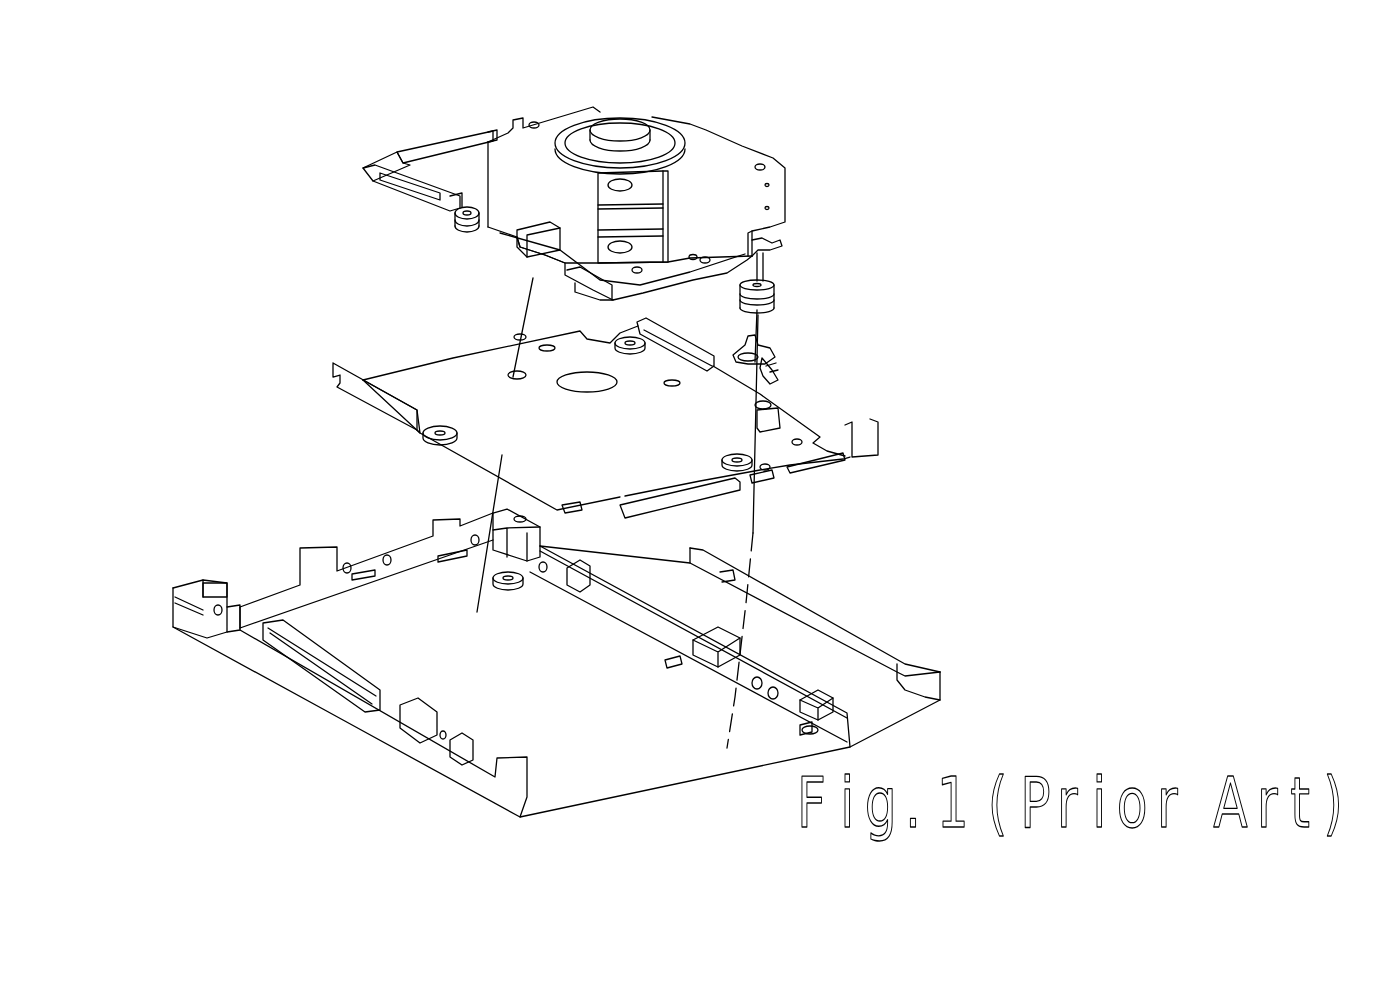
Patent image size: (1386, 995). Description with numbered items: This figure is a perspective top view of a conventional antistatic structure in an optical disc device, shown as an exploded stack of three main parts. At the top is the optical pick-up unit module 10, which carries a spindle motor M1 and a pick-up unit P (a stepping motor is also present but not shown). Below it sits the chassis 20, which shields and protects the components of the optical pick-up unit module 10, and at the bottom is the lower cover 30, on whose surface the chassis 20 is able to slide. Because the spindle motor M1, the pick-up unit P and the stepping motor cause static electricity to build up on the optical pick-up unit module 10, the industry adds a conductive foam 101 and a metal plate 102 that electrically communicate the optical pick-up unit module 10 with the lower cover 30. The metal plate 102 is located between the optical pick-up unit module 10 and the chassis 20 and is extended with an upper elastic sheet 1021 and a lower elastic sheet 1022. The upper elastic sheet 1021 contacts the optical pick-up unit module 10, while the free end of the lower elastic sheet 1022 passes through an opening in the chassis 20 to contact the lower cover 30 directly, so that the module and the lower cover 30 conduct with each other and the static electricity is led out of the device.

The optical pick-up unit module 10 is at (647, 212).
The spindle motor M1 is at (614, 128).
The pick-up unit P is at (643, 190).
The conductive foam 101 is at (514, 337).
The metal plate 102 is at (740, 357).
The upper elastic sheet 1021 is at (756, 345).
The lower elastic sheet 1022 is at (778, 362).
The chassis 20 is at (805, 425).
The lower cover 30 is at (750, 706).